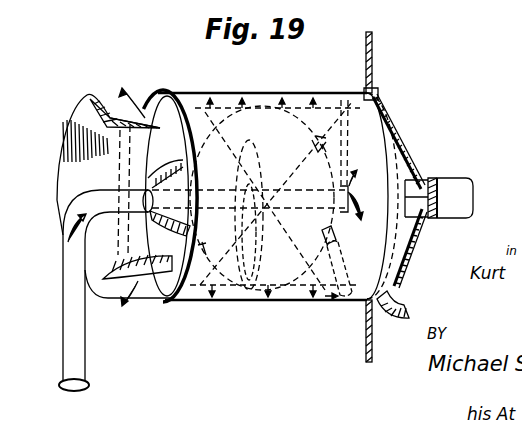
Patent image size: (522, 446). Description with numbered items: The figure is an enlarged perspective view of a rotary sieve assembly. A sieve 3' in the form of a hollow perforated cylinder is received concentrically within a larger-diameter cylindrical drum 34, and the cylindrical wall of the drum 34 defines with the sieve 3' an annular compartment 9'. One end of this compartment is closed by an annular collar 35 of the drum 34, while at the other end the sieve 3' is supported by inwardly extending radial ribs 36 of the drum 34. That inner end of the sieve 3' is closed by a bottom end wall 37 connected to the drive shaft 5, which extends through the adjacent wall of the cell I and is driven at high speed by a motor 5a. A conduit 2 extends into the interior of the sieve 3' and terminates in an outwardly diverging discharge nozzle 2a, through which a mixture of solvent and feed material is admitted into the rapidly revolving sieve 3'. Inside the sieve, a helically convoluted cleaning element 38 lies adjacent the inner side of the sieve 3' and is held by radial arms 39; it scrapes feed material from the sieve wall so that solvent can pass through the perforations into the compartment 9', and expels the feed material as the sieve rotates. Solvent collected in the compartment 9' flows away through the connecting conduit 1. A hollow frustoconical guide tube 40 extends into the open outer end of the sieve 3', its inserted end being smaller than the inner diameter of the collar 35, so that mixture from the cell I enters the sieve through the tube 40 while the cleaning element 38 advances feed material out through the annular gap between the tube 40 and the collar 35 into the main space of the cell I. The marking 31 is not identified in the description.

The connecting conduit 1 is at (400, 294).
The cell I is at (373, 46).
The conduit 2 is at (63, 308).
The discharge nozzle 2a is at (347, 196).
The sieve 3' is at (261, 215).
The drive shaft 5 is at (419, 194).
The motor 5a is at (474, 191).
The annular compartment 9' is at (278, 182).
The blade 31 is at (210, 258).
The drum 34 is at (290, 304).
The annular collar 35 is at (126, 112).
The radial ribs 36 is at (379, 100).
The bottom end wall 37 is at (332, 270).
The cleaning element 38 is at (222, 125).
The radial arms 39 is at (231, 160).
The guide tube 40 is at (78, 108).